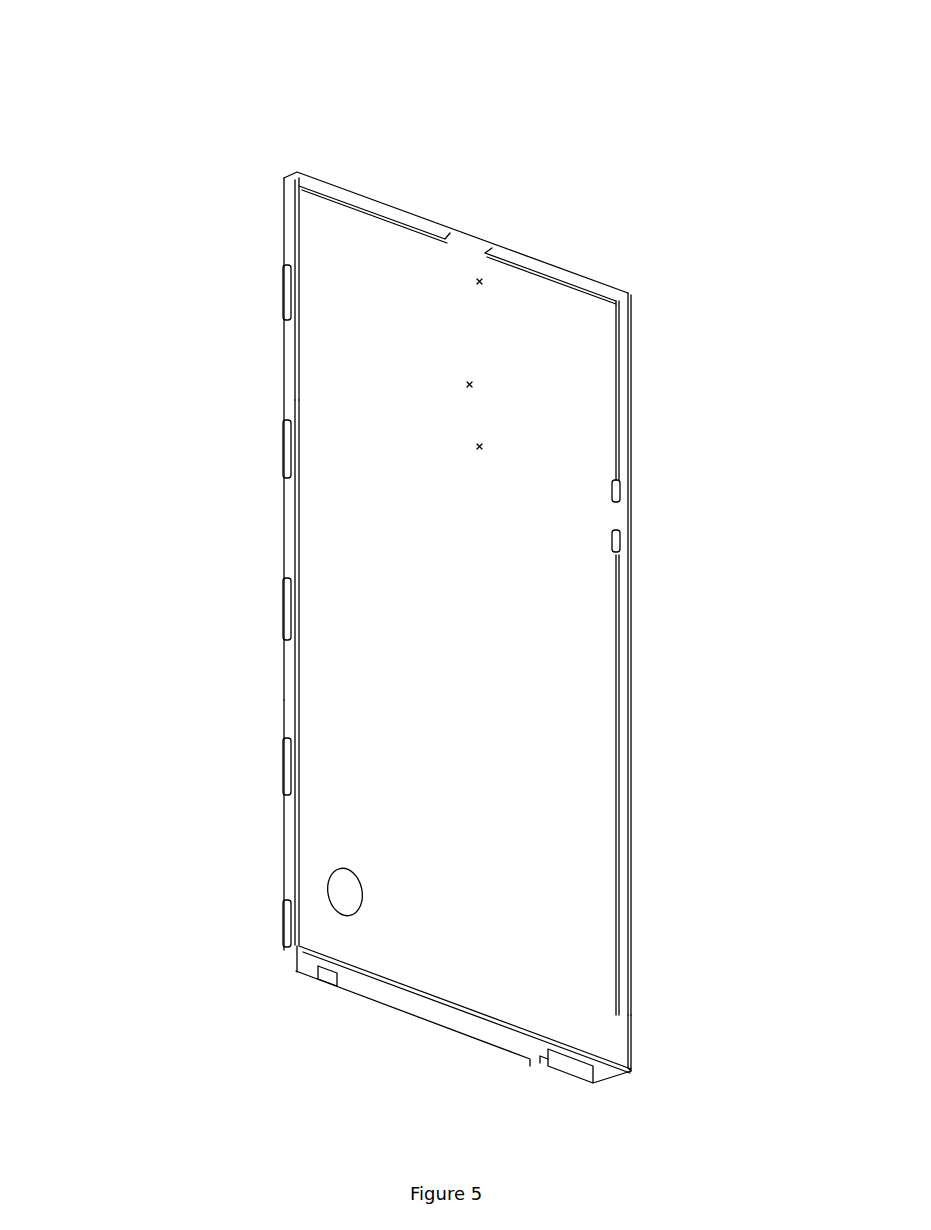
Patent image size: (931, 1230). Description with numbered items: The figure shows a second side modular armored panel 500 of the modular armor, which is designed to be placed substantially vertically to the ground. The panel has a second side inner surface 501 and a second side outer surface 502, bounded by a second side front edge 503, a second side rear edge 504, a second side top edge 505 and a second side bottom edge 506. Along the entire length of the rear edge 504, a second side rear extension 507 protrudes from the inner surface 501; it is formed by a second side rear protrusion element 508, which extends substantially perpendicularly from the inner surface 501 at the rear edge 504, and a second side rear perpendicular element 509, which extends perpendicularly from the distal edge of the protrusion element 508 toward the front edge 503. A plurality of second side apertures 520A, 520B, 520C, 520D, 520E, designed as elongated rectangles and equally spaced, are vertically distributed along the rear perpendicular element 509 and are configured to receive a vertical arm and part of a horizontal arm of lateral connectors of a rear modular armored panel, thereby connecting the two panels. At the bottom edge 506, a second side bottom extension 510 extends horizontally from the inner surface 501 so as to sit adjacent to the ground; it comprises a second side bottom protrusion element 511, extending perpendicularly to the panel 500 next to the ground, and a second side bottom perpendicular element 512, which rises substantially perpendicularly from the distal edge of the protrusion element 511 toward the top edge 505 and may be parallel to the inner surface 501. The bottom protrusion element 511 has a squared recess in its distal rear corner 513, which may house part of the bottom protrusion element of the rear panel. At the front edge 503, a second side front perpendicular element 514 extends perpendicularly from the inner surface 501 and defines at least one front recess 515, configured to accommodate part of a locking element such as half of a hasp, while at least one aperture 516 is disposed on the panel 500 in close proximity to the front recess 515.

The second side modular armored panel 500 is at (313, 149).
The second side inner surface 501 is at (568, 335).
The second side outer surface 502 is at (647, 312).
The second side front edge 503 is at (630, 440).
The second side rear edge 504 is at (265, 518).
The second side top edge 505 is at (515, 252).
The second side bottom edge 506 is at (633, 1066).
The second side rear extension 507 is at (287, 694).
The second side rear protrusion element 508 is at (287, 812).
The second side rear perpendicular element 509 is at (296, 358).
The second side bottom extension 510 is at (458, 1048).
The second side bottom protrusion element 511 is at (605, 1072).
The second side bottom perpendicular element 512 is at (395, 1003).
The distal rear corner 513 is at (288, 967).
The second side front perpendicular element 514 is at (622, 700).
The front recess 515 is at (622, 545).
The aperture 516 is at (620, 490).
The second side aperture 520A is at (280, 298).
The second side aperture 520B is at (283, 452).
The second side aperture 520C is at (283, 617).
The second side aperture 520D is at (285, 757).
The second side aperture 520E is at (285, 920).